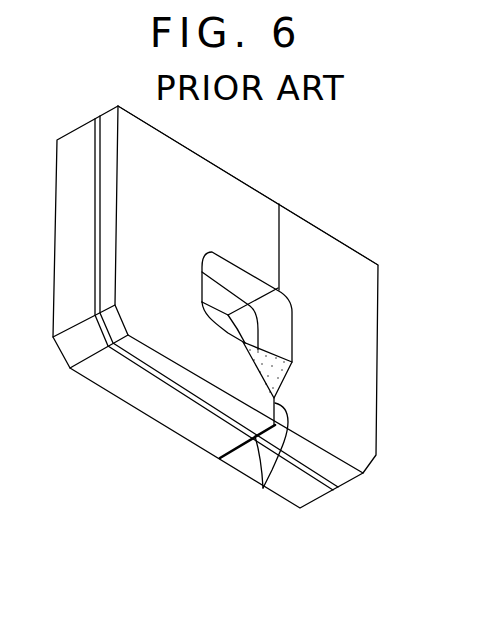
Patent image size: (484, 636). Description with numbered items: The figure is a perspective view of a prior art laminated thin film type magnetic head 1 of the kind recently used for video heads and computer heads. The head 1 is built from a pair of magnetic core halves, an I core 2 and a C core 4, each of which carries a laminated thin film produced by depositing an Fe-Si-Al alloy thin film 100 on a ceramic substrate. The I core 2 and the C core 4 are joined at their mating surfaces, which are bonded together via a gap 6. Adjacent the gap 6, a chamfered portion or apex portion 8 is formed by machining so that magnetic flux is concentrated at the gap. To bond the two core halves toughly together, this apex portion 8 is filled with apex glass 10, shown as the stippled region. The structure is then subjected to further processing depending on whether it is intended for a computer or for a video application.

The laminated thin film type magnetic head 1 is at (333, 188).
The I core 2 is at (353, 263).
The C core 4 is at (225, 183).
The gap 6 is at (263, 488).
The apex portion 8 is at (283, 342).
The apex glass 10 is at (288, 377).
The Fe-Si-Al alloy thin film 100 is at (187, 397).